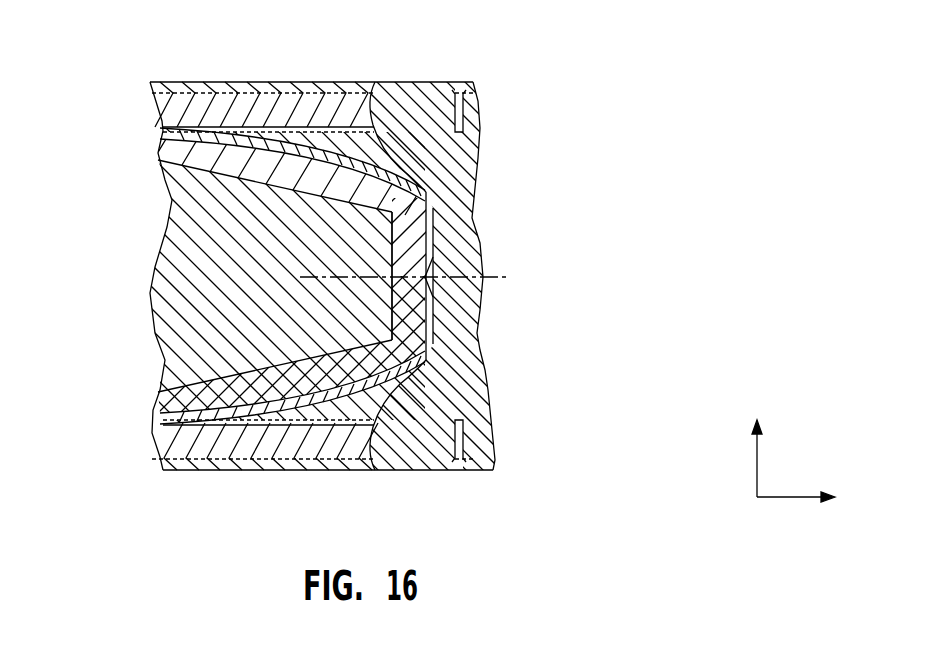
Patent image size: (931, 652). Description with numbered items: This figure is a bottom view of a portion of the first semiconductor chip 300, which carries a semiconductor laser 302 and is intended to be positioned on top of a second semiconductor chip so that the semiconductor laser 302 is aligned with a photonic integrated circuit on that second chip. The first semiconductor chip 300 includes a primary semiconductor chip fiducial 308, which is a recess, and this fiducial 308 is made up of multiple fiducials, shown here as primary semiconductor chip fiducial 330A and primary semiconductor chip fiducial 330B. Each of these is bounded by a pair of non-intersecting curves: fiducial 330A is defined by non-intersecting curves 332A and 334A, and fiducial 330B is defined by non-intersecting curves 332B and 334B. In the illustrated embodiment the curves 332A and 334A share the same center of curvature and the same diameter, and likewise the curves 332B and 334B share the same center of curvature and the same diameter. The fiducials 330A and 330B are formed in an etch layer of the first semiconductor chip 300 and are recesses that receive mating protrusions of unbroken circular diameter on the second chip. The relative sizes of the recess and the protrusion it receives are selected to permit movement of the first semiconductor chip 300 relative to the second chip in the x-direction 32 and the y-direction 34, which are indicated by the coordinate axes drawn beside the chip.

The first semiconductor chip 300 is at (586, 100).
The semiconductor laser 302 is at (175, 316).
The primary semiconductor chip fiducial 308 is at (510, 172).
The non-intersecting curve 332A is at (340, 80).
The non-intersecting curve 332B is at (330, 472).
The non-intersecting curve 334A is at (462, 115).
The non-intersecting curve 334B is at (472, 450).
The primary semiconductor chip fiducial 330A is at (472, 121).
The primary semiconductor chip fiducial 330B is at (470, 433).
The y-direction 34 is at (757, 458).
The x-direction 32 is at (797, 500).